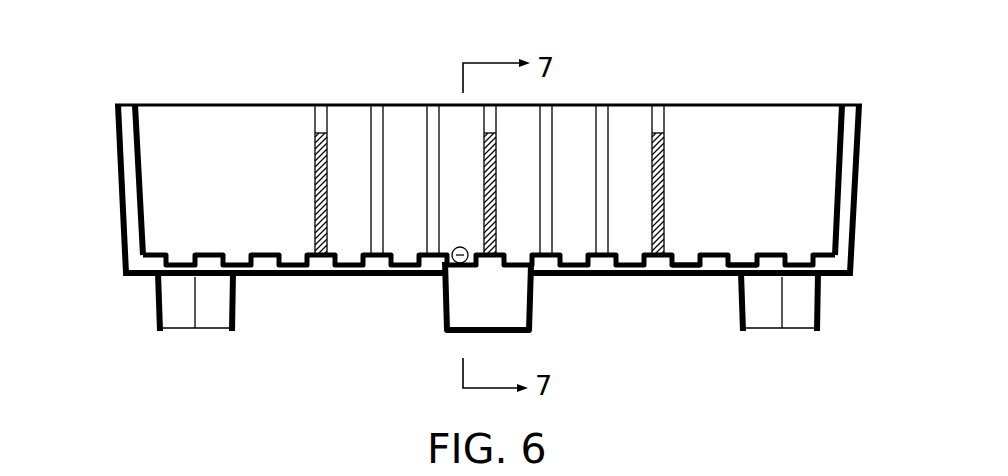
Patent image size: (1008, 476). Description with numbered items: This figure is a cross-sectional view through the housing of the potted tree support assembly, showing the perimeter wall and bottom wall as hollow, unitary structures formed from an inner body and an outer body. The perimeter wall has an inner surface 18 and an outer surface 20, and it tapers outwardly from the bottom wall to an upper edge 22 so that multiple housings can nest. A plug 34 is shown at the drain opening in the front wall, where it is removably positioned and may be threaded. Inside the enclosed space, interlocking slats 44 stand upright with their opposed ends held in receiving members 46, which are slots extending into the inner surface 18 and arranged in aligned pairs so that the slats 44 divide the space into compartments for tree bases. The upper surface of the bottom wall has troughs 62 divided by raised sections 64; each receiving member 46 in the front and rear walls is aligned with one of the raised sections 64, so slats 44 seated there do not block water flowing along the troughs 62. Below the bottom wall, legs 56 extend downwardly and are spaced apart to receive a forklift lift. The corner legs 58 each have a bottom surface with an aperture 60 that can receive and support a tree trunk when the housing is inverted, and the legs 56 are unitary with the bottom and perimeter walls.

The inner surface 18 is at (137, 145).
The outer surface 20 is at (118, 188).
The upper edge 22 is at (848, 105).
The plug 34 is at (453, 262).
The interlocking slats 44 is at (315, 157).
The receiving members 46 is at (373, 120).
The legs 56 is at (719, 291).
The corner legs 58 is at (155, 331).
The aperture 60 is at (195, 343).
The troughs 62 is at (745, 239).
The raised sections 64 is at (672, 233).